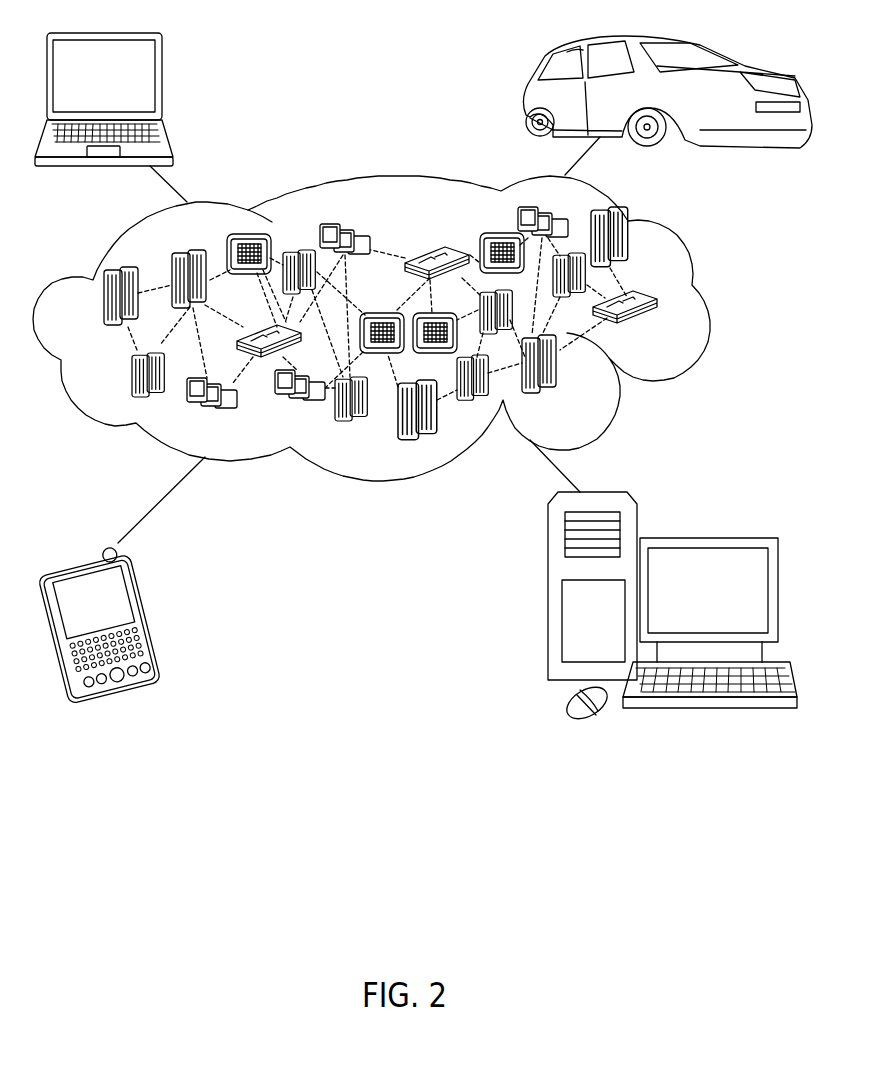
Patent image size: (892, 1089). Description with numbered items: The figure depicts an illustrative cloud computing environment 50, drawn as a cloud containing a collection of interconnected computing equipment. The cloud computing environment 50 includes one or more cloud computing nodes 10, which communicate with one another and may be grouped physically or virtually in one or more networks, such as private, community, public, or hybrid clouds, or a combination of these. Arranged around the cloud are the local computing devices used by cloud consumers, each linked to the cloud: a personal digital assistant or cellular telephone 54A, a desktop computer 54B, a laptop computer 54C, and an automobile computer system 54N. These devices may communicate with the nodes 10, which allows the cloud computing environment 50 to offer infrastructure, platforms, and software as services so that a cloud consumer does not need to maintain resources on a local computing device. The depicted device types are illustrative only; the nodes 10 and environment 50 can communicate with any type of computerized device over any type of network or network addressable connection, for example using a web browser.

The cloud computing environment 50 is at (707, 303).
The cloud computing node 10 is at (662, 330).
The personal digital assistant (PDA) or cellular telephone 54A is at (150, 617).
The desktop computer 54B is at (703, 538).
The laptop computer 54C is at (164, 82).
The automobile computer system 54N is at (525, 97).